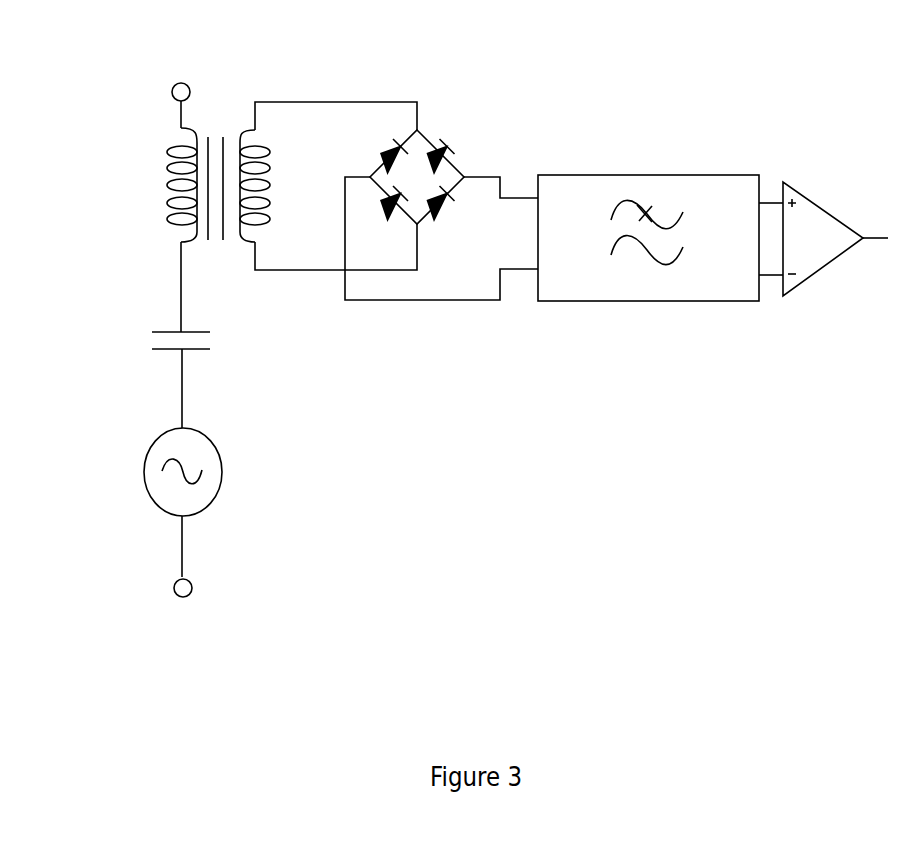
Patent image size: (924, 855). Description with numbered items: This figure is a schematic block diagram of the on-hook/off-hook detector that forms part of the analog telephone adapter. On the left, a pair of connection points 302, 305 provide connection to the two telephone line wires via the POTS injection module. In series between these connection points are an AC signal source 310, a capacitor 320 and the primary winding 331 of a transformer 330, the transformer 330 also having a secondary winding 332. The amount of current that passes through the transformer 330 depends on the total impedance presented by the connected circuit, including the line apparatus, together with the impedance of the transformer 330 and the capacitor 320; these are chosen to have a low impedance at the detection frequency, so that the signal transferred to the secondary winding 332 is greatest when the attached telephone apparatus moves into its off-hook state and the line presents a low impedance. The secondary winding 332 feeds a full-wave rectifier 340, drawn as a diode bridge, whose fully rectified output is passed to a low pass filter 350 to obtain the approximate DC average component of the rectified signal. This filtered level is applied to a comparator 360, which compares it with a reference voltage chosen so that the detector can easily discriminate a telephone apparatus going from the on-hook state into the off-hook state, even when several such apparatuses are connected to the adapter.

The connection point 302 is at (172, 91).
The connection point 305 is at (173, 588).
The AC signal source 310 is at (142, 477).
The capacitor 320 is at (167, 352).
The transformer 330 is at (215, 77).
The primary winding 331 is at (170, 188).
The secondary winding 332 is at (267, 167).
The full-wave rectifier 340 is at (435, 115).
The low pass filter 350 is at (695, 302).
The comparator 360 is at (812, 198).